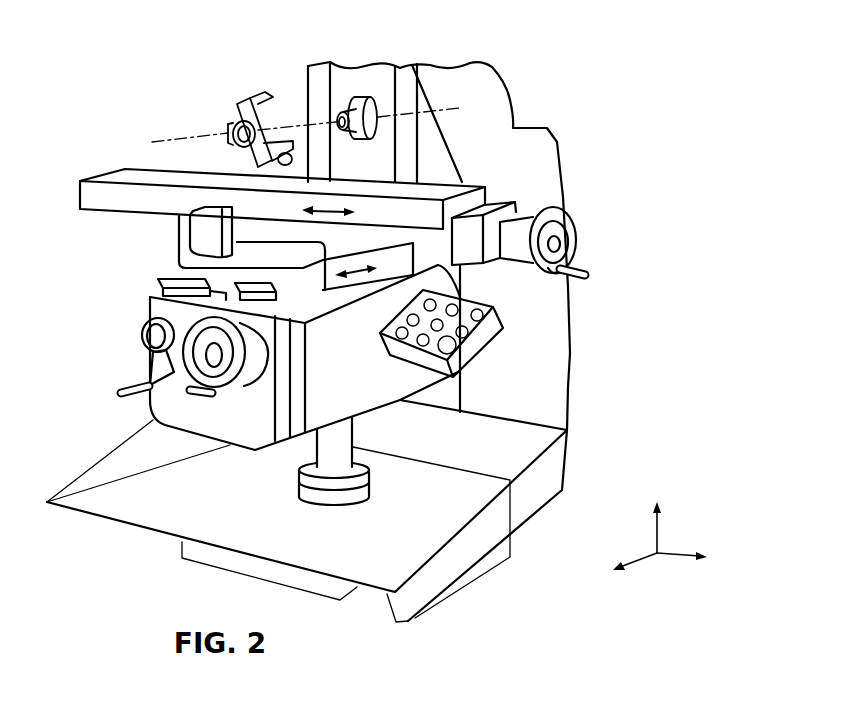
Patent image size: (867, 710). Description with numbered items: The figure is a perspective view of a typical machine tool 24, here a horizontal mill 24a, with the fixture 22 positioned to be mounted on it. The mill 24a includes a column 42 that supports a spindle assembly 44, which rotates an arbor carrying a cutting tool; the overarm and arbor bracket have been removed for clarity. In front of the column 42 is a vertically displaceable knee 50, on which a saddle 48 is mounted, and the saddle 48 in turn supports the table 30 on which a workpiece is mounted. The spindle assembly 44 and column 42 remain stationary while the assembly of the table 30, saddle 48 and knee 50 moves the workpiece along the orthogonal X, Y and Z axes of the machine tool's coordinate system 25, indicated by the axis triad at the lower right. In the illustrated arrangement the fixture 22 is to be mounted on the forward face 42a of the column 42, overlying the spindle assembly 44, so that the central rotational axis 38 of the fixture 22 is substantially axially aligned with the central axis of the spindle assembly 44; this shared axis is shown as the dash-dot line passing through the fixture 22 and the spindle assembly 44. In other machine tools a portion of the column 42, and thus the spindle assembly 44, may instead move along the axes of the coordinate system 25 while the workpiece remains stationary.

The fixture 22 is at (229, 93).
The machine tool 24 is at (604, 207).
The horizontal mill 24a is at (592, 342).
The coordinate system 25 is at (683, 515).
The table 30 is at (103, 192).
The central rotational axis 38 is at (172, 140).
The column 42 is at (462, 132).
The forward face 42a is at (362, 80).
The spindle assembly 44 is at (388, 106).
The saddle 48 is at (177, 220).
The knee 50 is at (173, 380).